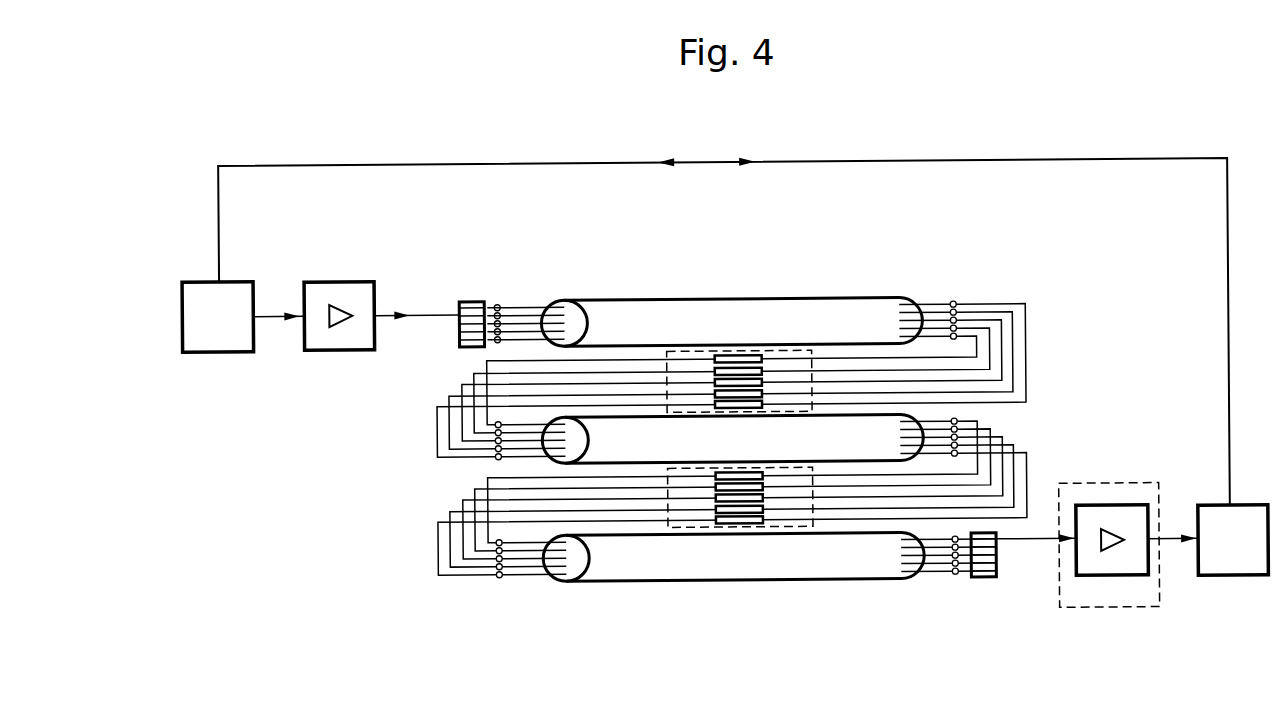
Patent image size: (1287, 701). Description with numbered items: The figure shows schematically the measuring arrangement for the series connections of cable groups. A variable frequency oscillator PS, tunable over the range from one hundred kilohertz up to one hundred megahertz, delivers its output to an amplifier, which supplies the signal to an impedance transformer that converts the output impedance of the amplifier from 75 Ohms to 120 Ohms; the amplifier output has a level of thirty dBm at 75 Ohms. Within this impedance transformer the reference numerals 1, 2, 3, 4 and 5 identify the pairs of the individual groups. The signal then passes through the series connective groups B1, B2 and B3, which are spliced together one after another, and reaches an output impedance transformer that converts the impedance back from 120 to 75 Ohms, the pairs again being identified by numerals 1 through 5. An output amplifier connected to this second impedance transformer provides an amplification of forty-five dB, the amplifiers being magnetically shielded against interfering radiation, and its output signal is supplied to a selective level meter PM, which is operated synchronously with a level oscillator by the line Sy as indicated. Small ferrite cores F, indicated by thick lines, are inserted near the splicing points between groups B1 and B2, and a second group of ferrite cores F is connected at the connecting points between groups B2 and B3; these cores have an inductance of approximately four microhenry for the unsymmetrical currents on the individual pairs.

The pair of individual group 1 is at (460, 305).
The pair of individual group 2 is at (460, 317).
The pair of individual group 3 is at (460, 325).
The pair of individual group 4 is at (460, 333).
The pair of individual group 5 is at (460, 341).
The synchronizing line Sy is at (876, 162).
The variable frequency oscillator PS is at (218, 317).
The selective level meter PM is at (1233, 540).
The series connective group B1 is at (731, 321).
The series connective group B2 is at (732, 438).
The series connective group B3 is at (733, 556).
The ferrite cores F is at (764, 384).
The 75 Ohm impedance 75 is at (462, 286).
The 120 Ohm impedance 120 is at (537, 286).